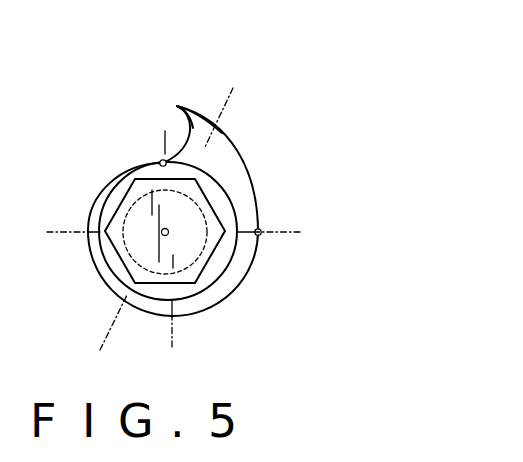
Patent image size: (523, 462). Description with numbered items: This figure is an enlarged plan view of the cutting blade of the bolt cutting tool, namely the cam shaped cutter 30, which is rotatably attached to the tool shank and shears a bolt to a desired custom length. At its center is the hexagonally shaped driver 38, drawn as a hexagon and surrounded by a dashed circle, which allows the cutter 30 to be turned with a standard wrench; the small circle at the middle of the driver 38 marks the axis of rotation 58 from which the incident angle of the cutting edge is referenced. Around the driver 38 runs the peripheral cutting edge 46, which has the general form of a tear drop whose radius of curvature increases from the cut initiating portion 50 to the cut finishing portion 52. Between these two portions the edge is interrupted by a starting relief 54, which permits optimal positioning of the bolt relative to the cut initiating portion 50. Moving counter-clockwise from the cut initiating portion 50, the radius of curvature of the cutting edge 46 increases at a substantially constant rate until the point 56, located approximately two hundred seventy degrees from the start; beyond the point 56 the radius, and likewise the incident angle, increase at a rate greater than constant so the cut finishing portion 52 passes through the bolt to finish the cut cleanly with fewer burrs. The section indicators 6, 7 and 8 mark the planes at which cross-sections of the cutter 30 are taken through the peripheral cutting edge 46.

The cam shaped cutter 30 is at (270, 138).
The hexagonally shaped driver 38 is at (212, 255).
The peripheral cutting edge 46 is at (96, 198).
The cut initiating portion 50 is at (160, 163).
The cut finishing portion 52 is at (175, 106).
The starting relief 54 is at (175, 106).
The point 56 is at (258, 228).
The axis of rotation 58 is at (167, 234).
The section line 6- 6 is at (165, 131).
The section line 7- 7 is at (47, 232).
The section line 8- 8 is at (233, 88).